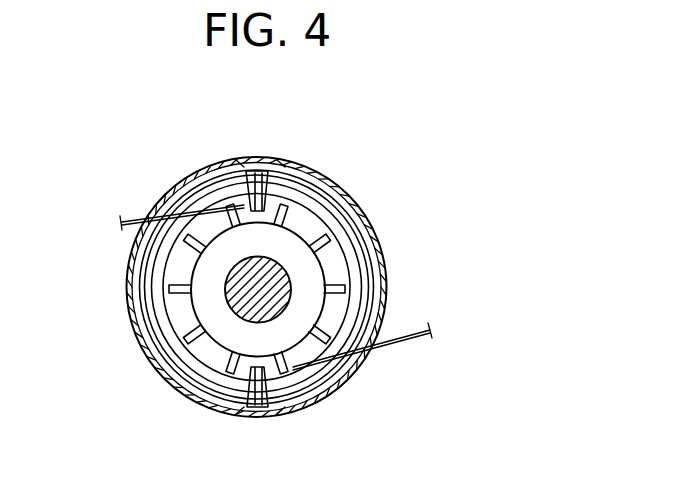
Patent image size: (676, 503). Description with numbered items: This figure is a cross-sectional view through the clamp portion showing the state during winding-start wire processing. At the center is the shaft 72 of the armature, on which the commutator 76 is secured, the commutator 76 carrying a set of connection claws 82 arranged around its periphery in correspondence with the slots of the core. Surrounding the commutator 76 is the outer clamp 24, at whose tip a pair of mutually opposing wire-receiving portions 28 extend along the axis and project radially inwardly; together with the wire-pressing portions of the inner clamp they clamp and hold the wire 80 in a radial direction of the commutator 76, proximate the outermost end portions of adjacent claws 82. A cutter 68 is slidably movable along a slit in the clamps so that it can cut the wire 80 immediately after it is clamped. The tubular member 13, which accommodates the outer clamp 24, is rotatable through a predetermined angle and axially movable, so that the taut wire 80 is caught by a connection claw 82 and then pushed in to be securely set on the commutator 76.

The tubular member 13 is at (306, 163).
The outer clamp 24 is at (346, 201).
The wire-receiving portions 28 is at (226, 168).
The cutter 68 is at (258, 170).
The shaft 72 is at (236, 308).
The commutator 76 is at (148, 323).
The wire 80 is at (129, 215).
The connection claws 82 is at (326, 246).